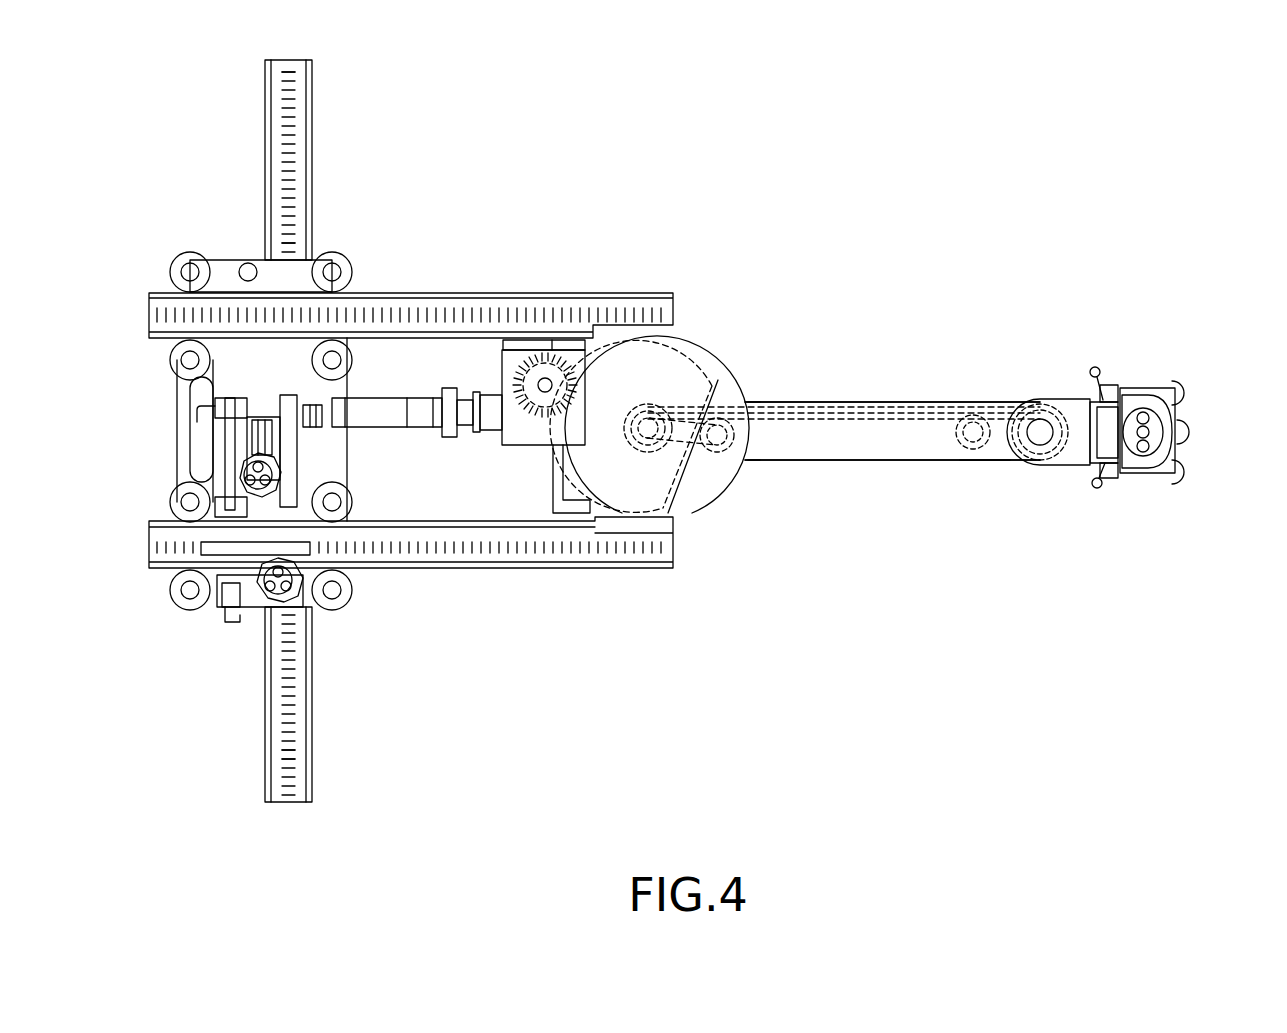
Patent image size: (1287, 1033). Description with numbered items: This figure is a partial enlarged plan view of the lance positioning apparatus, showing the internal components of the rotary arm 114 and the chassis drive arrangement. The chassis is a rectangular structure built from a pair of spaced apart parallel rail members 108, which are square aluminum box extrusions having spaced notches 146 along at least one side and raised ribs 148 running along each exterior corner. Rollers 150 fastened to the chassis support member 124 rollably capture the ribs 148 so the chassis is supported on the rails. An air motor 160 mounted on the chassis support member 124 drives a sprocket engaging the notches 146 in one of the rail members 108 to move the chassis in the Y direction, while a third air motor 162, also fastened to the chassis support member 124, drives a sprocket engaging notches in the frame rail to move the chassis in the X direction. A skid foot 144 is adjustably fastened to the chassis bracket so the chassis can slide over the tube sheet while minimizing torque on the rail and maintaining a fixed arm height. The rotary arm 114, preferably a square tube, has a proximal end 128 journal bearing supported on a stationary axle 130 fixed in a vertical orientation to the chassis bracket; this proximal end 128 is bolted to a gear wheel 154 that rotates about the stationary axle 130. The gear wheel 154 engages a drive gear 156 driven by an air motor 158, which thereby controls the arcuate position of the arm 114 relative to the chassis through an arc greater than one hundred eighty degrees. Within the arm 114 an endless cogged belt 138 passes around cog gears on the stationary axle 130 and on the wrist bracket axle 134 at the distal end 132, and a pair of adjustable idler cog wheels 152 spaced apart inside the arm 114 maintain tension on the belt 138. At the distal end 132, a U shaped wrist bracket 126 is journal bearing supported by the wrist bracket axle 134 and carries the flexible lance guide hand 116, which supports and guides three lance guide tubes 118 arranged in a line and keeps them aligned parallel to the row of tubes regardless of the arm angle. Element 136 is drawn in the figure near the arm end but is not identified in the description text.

The rail members 108 is at (495, 293).
The rotary arm 114 is at (900, 402).
The flexible lance guide hand 116 is at (1138, 385).
The lance guide tubes 118 is at (1182, 390).
The chassis support member 124 is at (347, 468).
The wrist bracket 126 is at (1083, 473).
The proximal end 128 is at (622, 405).
The stationary axle 130 is at (650, 422).
The distal end 132 is at (985, 460).
The wrist bracket axle 134 is at (1040, 420).
The arm end 136 is at (1053, 467).
The endless cogged belt 138 is at (838, 420).
The skid foot 144 is at (750, 395).
The notches 146 is at (290, 748).
The raised ribs 148 is at (312, 708).
The rollers 150 is at (348, 262).
The adjustable idler cog wheels 152 is at (722, 442).
The gear wheel 154 is at (715, 372).
The drive gear 156 is at (560, 350).
The air motor 158 is at (421, 427).
The air motor 160 is at (292, 592).
The air motor 162 is at (270, 478).